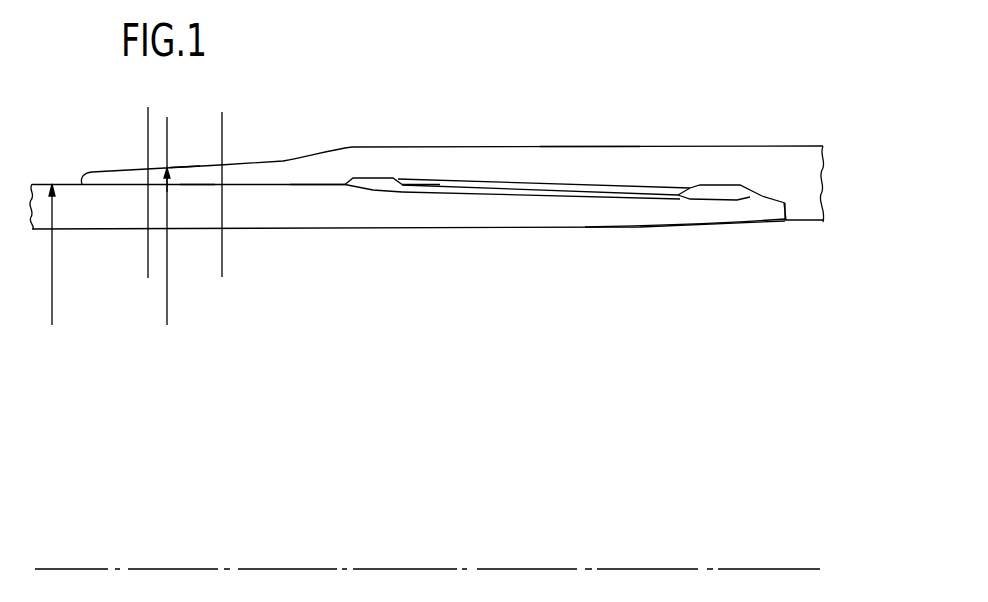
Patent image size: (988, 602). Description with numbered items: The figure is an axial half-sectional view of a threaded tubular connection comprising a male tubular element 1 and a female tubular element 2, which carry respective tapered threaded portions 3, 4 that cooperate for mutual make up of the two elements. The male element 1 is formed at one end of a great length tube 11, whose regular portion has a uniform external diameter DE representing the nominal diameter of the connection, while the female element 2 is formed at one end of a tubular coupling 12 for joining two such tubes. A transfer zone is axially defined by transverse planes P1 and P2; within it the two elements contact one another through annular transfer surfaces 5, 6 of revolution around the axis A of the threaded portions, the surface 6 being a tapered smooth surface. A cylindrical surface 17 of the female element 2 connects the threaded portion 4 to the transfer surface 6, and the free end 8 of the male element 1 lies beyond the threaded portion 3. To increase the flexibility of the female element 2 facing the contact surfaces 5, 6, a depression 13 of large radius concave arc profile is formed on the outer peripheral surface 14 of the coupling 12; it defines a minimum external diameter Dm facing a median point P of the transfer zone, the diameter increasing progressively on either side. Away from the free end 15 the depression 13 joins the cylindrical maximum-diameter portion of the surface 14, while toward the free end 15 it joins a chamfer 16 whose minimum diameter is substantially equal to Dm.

The male tubular element 1 is at (283, 229).
The female tubular element 2 is at (500, 146).
The tapered threaded portion of the male element 3 is at (570, 198).
The tapered threaded portion of the female element 4 is at (425, 181).
The annular transfer surface of the male element 5 is at (178, 182).
The annular transfer surface of the female element 6 is at (197, 188).
The free end of the male element 8 is at (788, 211).
The great length tube 11 is at (38, 192).
The tubular coupling 12 is at (812, 165).
The depression 13 is at (283, 160).
The outer peripheral surface of the coupling 14 is at (590, 146).
The free end of the female element 15 is at (80, 183).
The chamfer 16 is at (93, 172).
The cylindrical surface of the female element 17 is at (312, 188).
The median point of the transfer zone P is at (167, 192).
The transverse plane P1 is at (223, 128).
The transverse plane P2 is at (147, 127).
The external diameter of the tube DE is at (52, 288).
The minimum external diameter Dm is at (167, 303).
The axis A is at (507, 568).